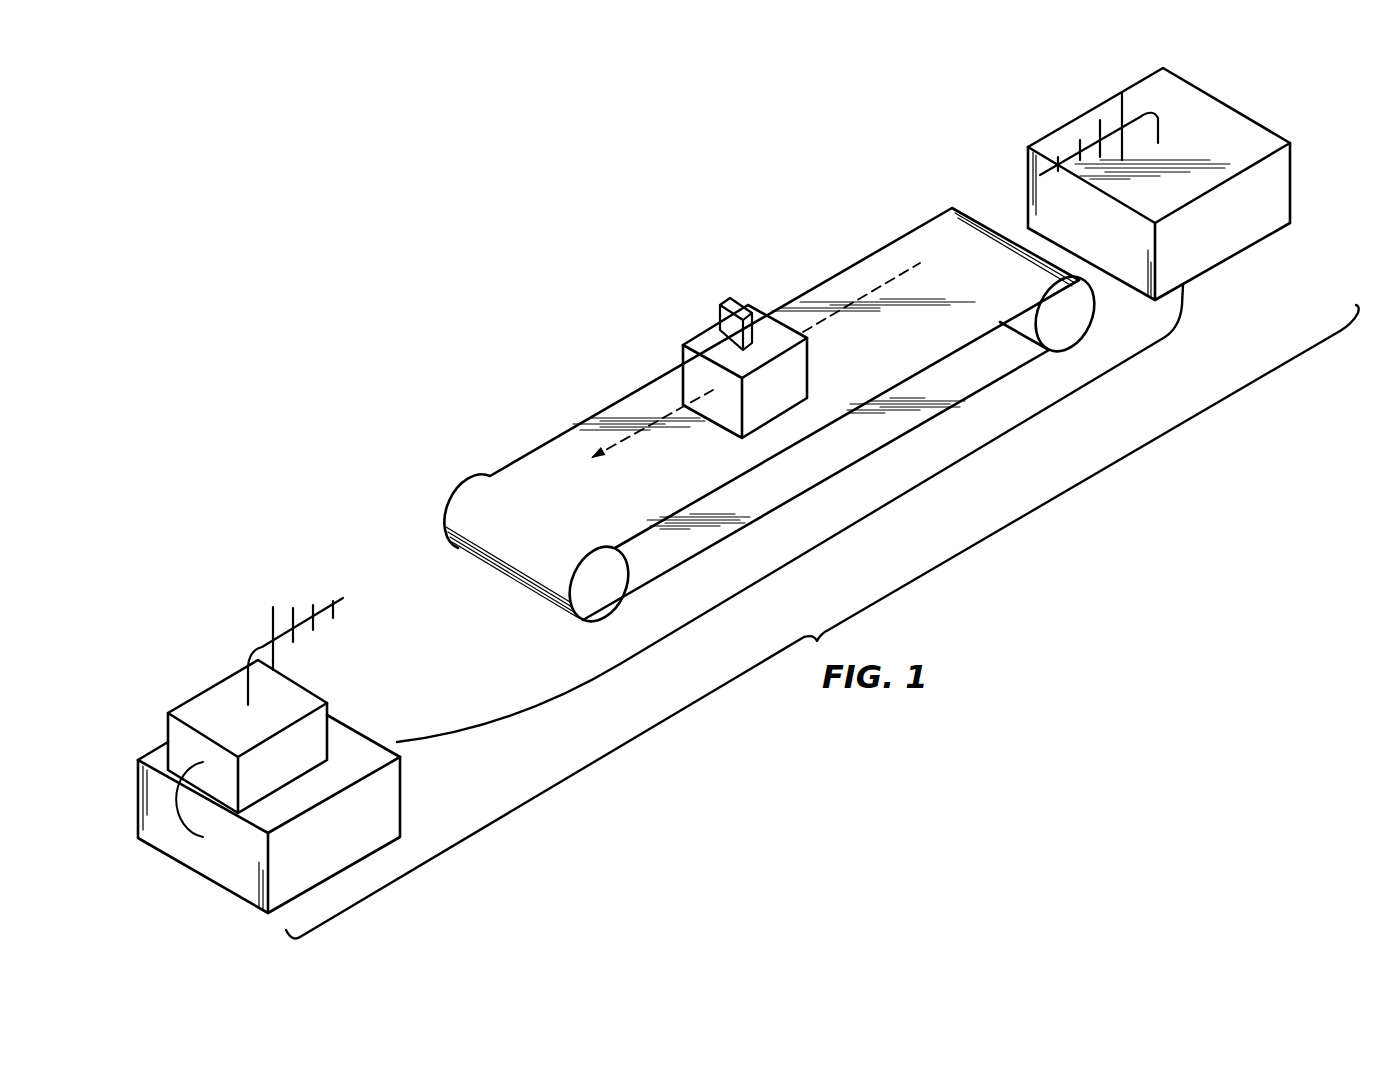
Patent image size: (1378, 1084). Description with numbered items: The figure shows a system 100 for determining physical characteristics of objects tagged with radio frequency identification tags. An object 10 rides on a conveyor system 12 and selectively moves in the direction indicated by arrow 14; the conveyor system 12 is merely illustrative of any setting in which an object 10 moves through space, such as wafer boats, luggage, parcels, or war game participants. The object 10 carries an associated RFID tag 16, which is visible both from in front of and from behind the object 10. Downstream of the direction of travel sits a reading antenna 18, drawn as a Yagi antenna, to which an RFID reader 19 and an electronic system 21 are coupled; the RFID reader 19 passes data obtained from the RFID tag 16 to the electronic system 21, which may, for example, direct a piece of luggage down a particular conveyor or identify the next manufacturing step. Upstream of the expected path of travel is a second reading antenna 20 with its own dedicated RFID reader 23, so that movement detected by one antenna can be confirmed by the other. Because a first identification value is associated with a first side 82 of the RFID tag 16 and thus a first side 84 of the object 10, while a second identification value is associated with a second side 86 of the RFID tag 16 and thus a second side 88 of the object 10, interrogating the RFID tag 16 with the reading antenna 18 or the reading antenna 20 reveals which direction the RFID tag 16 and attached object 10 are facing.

The system 100 is at (240, 269).
The conveyor system 12 is at (885, 222).
The arrow 14 is at (630, 437).
The object 10 is at (697, 335).
The RFID tag 16 is at (727, 300).
The first side of the RFID tag 82 is at (693, 357).
The first side of the object 84 is at (697, 378).
The second side of the RFID tag 86 is at (755, 330).
The second side of the object 88 is at (805, 338).
The reading antenna 18 is at (250, 616).
The RFID reader 19 is at (298, 695).
The second reading antenna 20 is at (1080, 127).
The electronic system 21 is at (402, 807).
The RFID reader 23 is at (1247, 137).